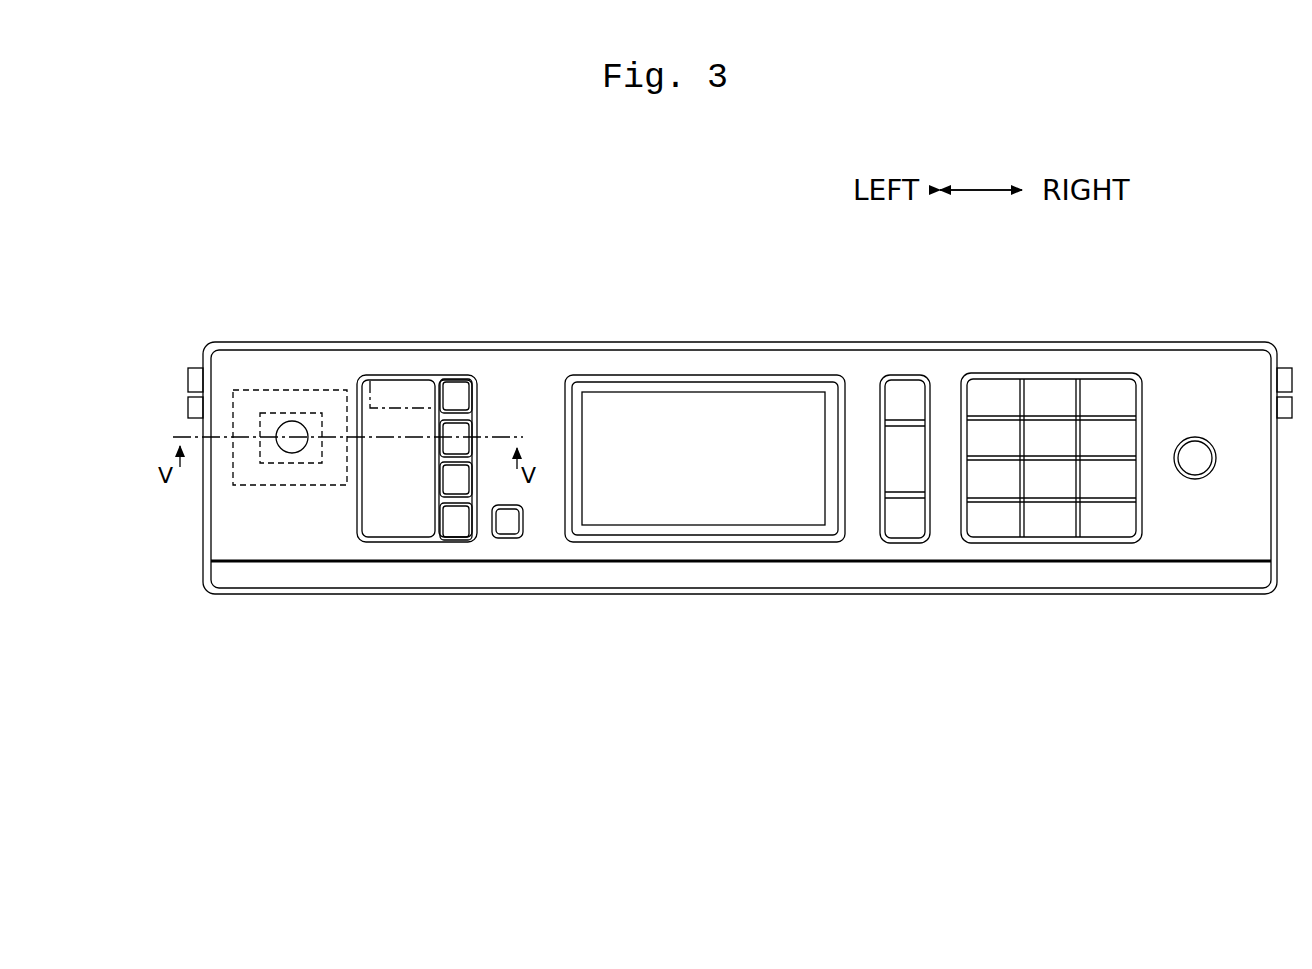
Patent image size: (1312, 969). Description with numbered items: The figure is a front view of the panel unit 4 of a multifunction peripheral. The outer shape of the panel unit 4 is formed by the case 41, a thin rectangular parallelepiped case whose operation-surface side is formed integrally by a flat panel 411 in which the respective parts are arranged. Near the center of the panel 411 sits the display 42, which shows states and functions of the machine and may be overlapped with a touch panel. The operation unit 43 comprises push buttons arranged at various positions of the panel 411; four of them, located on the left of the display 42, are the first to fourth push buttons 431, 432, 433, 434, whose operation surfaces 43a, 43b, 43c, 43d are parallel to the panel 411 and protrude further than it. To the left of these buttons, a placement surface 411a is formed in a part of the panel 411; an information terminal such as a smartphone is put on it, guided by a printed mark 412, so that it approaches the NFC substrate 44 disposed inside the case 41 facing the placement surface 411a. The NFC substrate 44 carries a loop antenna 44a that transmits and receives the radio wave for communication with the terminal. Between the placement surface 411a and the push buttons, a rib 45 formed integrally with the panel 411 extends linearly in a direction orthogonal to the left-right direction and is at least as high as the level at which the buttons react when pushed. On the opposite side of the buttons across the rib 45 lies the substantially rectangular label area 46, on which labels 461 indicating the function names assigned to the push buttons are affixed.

The panel unit 4 is at (238, 266).
The case 41 is at (1214, 328).
The panel 411 is at (1152, 368).
The placement surface 411a is at (303, 473).
The mark 412 is at (285, 420).
The display 42 is at (673, 412).
The operation unit 43 is at (442, 551).
The operation surface 43a is at (448, 385).
The operation surface 43b is at (492, 427).
The operation surface 43c is at (462, 488).
The operation surface 43d is at (466, 553).
The first push button 431 is at (468, 365).
The second push button 432 is at (463, 428).
The third push button 433 is at (487, 486).
The fourth push button 434 is at (453, 522).
The NFC substrate 44 is at (321, 390).
The loop antenna 44a is at (273, 465).
The rib 45 is at (436, 377).
The label area 46 is at (377, 527).
The labels 461 is at (392, 380).